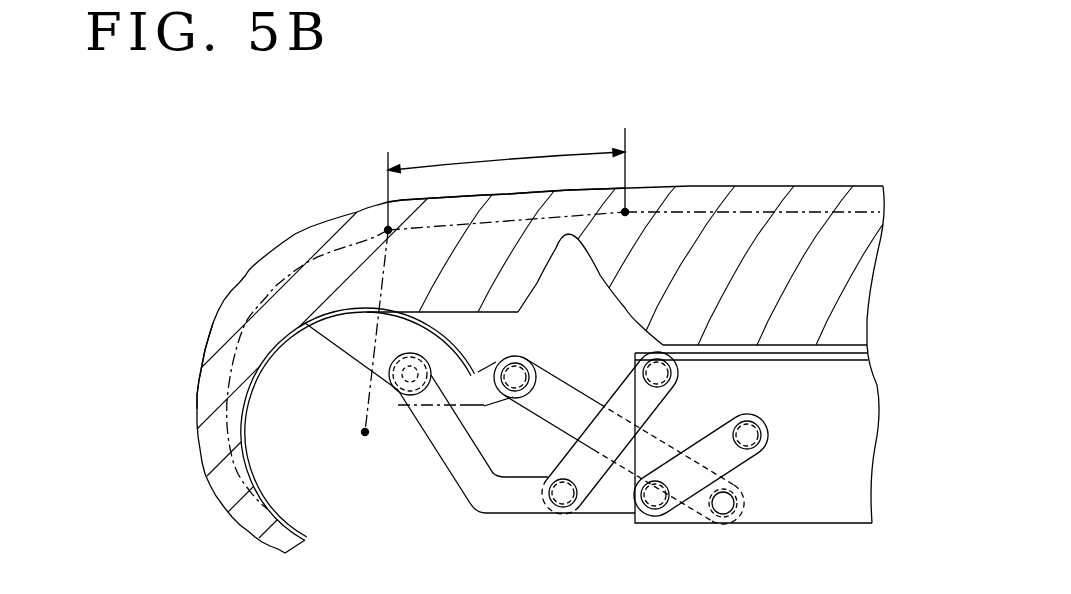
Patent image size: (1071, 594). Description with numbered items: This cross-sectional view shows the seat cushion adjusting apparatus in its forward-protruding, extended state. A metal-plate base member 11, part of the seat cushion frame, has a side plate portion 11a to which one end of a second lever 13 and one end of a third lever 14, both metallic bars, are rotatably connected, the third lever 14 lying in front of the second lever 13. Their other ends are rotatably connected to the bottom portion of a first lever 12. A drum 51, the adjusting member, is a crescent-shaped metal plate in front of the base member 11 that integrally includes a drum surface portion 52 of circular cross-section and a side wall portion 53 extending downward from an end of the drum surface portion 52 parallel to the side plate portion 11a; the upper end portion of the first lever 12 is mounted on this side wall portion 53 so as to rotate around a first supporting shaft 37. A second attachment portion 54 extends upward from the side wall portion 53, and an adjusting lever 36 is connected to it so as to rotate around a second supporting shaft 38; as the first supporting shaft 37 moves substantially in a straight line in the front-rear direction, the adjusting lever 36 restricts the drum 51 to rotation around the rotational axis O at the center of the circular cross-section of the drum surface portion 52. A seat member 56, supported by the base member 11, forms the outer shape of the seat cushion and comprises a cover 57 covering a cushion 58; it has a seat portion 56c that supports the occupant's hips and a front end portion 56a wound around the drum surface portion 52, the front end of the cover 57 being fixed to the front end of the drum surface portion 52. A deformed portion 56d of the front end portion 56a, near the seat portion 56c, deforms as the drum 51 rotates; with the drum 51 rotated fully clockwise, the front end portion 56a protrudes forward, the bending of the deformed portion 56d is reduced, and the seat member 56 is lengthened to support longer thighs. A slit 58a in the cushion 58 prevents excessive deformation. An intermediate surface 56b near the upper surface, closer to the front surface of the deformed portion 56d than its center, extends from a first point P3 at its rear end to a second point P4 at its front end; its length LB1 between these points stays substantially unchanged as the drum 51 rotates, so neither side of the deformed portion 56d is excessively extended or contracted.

The base member 11 is at (872, 283).
The side plate portion 11a is at (783, 372).
The first lever 12 is at (520, 512).
The second lever 13 is at (740, 463).
The third lever 14 is at (661, 401).
The adjusting lever 36 is at (602, 405).
The first supporting shaft 37 is at (410, 374).
The second supporting shaft 38 is at (531, 371).
The drum 51 is at (436, 307).
The drum surface portion 52 is at (246, 428).
The side wall portion 53 is at (333, 338).
The second attachment portion 54 is at (483, 370).
The seat member 56 is at (340, 144).
The front end portion 56a is at (218, 316).
The intermediate surface 56b is at (687, 211).
The seat portion 56c is at (760, 196).
The deformed portion 56d is at (580, 198).
The cover 57 is at (296, 236).
The cushion 58 is at (360, 214).
The slit 58a is at (615, 290).
The second length LB1 is at (488, 160).
The first point P3 is at (625, 214).
The second point P4 is at (390, 232).
The rotational axis O is at (364, 434).